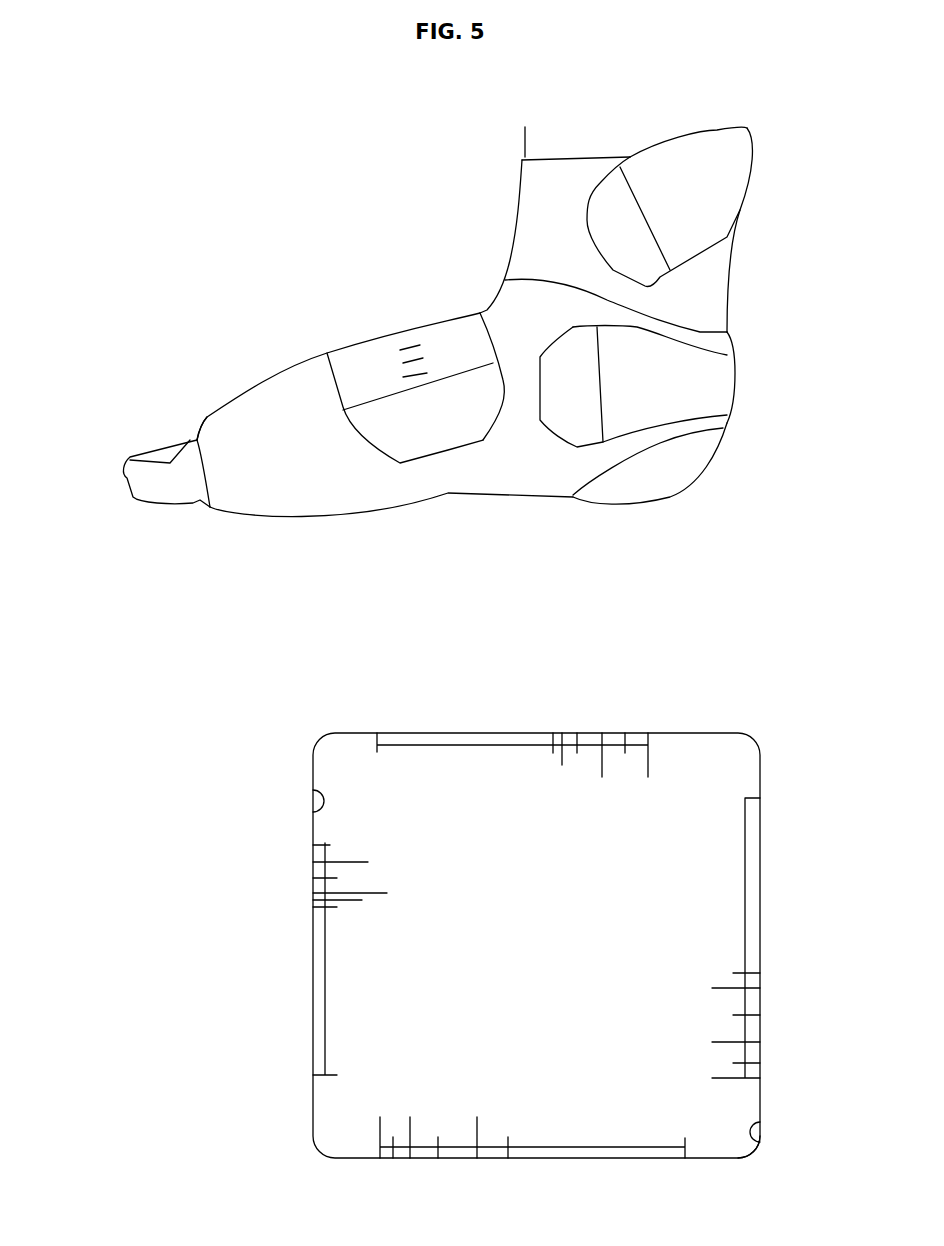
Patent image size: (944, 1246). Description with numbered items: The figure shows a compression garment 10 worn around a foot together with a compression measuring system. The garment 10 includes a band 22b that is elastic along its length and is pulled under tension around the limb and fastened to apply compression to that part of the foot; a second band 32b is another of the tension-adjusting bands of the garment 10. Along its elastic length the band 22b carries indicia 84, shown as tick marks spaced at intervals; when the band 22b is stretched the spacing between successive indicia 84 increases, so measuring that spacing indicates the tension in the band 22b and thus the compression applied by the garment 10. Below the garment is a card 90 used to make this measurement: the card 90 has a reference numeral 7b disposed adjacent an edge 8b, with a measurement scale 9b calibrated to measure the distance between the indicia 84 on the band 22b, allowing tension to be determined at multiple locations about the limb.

The compression garment 10 is at (257, 235).
The band 22b is at (472, 330).
The indicia 84 is at (393, 368).
The second band 32b is at (275, 450).
The card 90 is at (178, 772).
The measurement scale 9b is at (377, 720).
The edge 8b is at (308, 790).
The reference numeral 7b is at (745, 1158).